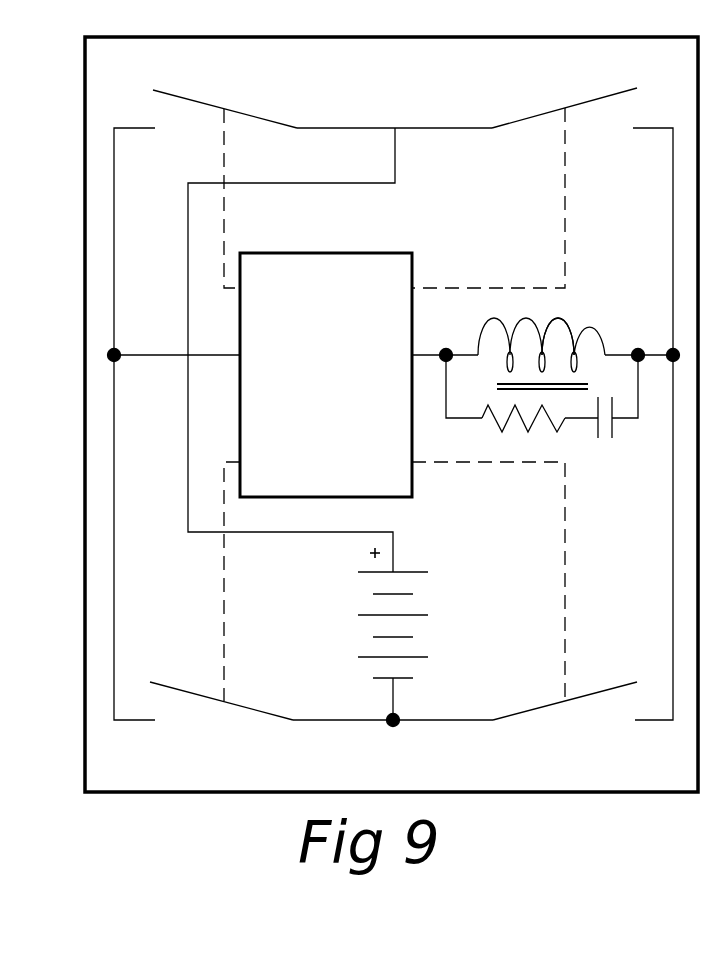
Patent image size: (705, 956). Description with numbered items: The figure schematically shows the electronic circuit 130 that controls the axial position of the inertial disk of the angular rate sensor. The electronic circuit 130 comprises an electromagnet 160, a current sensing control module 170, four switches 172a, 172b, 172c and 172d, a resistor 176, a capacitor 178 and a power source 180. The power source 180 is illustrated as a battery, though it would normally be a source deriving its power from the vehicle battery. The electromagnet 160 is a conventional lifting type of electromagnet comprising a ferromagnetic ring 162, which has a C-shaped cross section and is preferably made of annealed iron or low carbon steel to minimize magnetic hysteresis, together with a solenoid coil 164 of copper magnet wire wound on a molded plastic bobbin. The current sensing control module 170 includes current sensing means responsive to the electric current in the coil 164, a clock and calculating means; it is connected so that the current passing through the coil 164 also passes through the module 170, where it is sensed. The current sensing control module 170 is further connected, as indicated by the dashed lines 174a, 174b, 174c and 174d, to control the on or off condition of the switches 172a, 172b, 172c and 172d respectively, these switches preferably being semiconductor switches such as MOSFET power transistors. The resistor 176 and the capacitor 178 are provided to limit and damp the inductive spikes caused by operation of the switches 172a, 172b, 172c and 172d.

The electronic circuit 130 is at (597, 769).
The electromagnet 160 is at (535, 300).
The ferromagnetic ring 162 is at (582, 382).
The solenoid coil 164 is at (562, 320).
The current sensing control module 170 is at (342, 487).
The switch 172a is at (205, 102).
The switch 172b is at (583, 100).
The switch 172c is at (203, 693).
The switch 172d is at (583, 693).
The dashed line 174a is at (224, 223).
The dashed line 174b is at (565, 167).
The dashed line 174c is at (224, 642).
The dashed line 174d is at (565, 640).
The resistor 176 is at (528, 432).
The capacitor 178 is at (603, 442).
The power source 180 is at (380, 678).